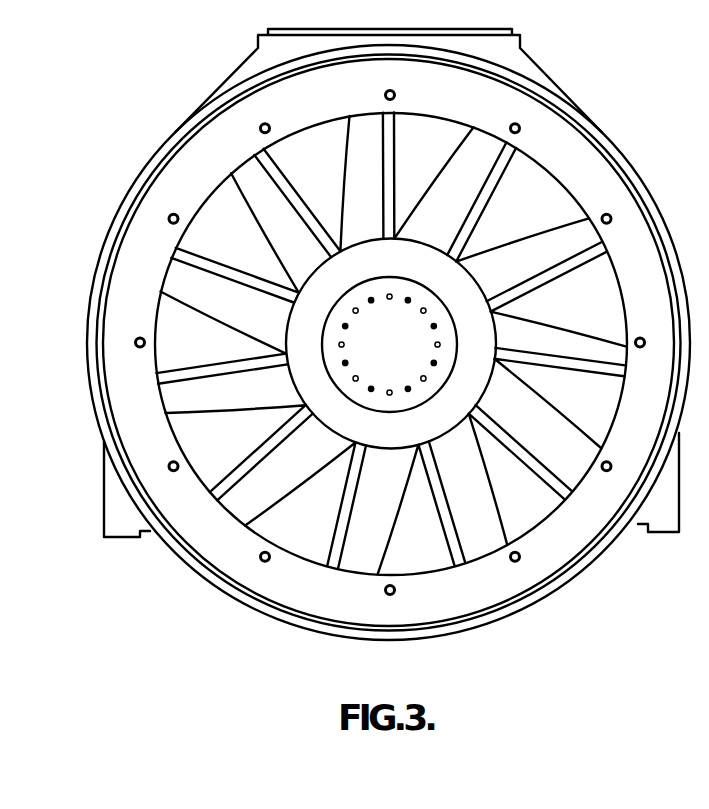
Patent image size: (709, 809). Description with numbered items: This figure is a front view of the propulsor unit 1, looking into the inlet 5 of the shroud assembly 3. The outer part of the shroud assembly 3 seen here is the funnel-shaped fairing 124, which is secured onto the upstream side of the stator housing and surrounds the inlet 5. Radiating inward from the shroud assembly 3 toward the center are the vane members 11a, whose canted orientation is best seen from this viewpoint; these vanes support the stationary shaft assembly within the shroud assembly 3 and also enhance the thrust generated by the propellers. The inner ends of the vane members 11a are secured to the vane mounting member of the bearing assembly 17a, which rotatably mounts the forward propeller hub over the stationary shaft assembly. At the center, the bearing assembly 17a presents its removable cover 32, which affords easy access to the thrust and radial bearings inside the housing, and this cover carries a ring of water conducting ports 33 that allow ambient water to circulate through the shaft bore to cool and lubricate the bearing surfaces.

The propulsor unit 1 is at (172, 116).
The shroud assembly 3 is at (116, 204).
The funnel-shaped fairing 124 is at (568, 147).
The inlet 5 is at (413, 344).
The bearing assembly 17a is at (280, 320).
The vane members 11a is at (350, 520).
The removable cover 32 is at (440, 369).
The water conducting ports 33 is at (422, 306).